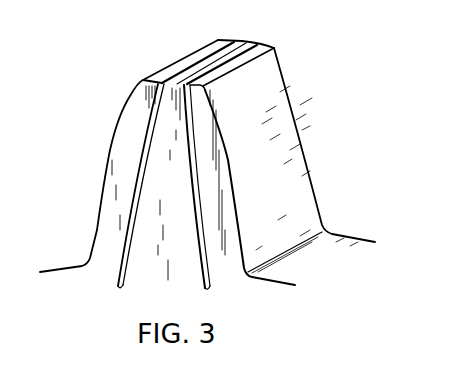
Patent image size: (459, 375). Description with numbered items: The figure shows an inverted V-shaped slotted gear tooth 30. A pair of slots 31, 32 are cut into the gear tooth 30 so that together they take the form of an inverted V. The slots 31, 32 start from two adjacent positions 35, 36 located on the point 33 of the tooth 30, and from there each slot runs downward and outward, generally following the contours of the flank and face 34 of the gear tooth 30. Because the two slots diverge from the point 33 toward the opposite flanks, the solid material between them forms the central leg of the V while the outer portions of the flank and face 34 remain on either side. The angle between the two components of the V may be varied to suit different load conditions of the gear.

The gear tooth 30 is at (326, 197).
The slot 31 is at (117, 278).
The slot 32 is at (208, 283).
The point 33 is at (190, 65).
The flank and face 34 is at (112, 150).
The adjacent position 35 is at (233, 42).
The adjacent position 36 is at (253, 43).